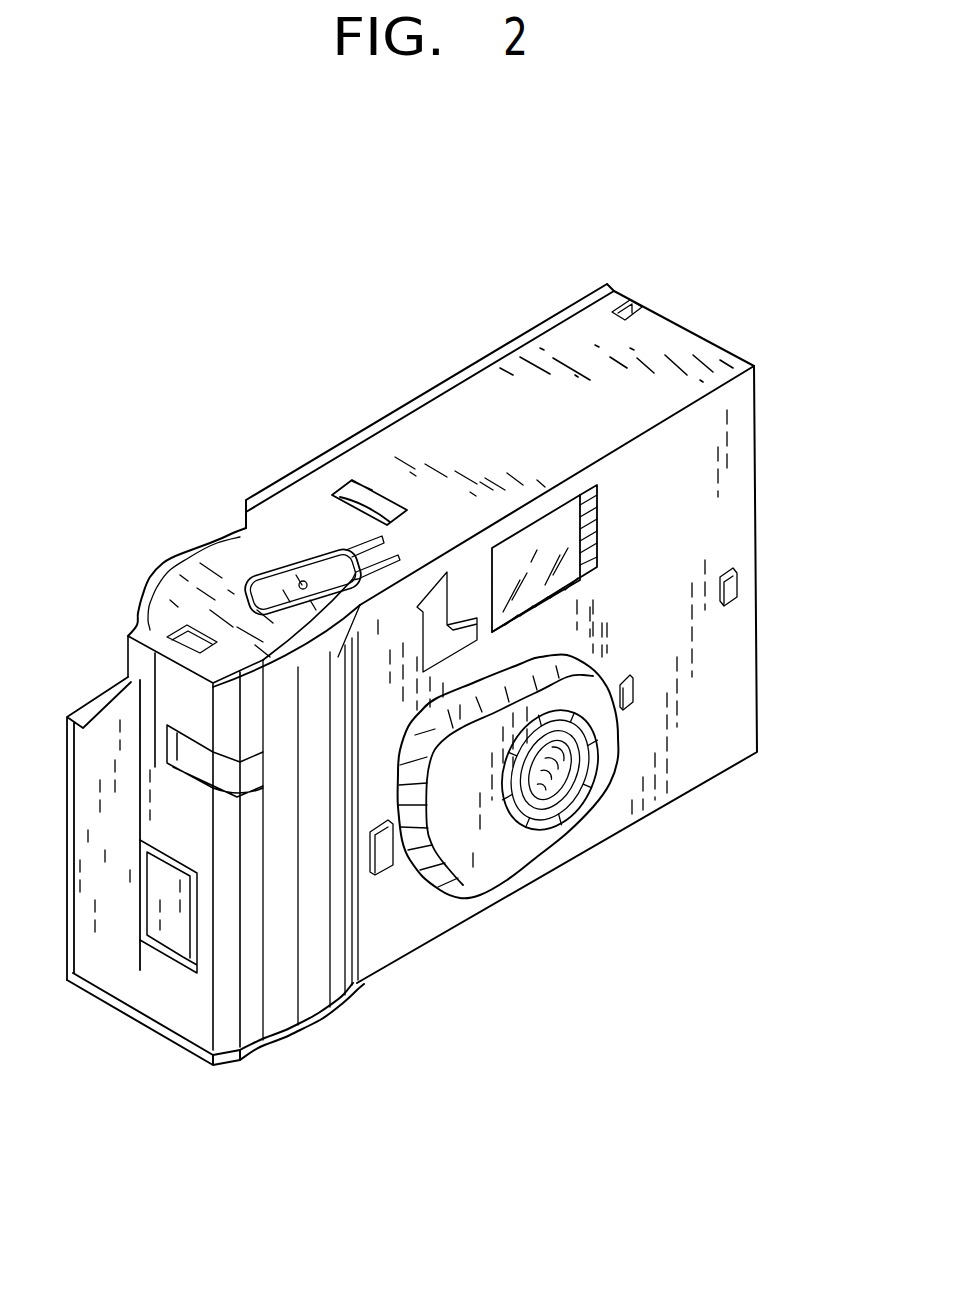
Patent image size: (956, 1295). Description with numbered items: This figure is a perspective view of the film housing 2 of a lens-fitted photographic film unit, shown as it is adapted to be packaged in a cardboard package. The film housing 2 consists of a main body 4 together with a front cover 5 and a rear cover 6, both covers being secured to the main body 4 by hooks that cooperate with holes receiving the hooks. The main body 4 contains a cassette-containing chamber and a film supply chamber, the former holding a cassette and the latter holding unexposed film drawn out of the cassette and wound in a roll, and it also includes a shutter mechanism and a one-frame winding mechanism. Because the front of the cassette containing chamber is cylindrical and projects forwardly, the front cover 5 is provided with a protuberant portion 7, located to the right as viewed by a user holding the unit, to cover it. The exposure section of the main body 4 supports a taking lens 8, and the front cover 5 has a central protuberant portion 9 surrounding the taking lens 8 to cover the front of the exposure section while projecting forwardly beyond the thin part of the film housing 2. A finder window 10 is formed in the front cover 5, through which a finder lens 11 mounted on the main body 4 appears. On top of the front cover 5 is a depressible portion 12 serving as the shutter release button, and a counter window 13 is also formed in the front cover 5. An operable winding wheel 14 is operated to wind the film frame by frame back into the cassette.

The film housing 2 is at (652, 268).
The main body 4 is at (118, 982).
The front cover 5 is at (668, 800).
The rear cover 6 is at (452, 377).
The protuberant portion 7 is at (318, 997).
The taking lens 8 is at (557, 793).
The central protuberant portion 9 is at (460, 872).
The finder window 10 is at (580, 582).
The finder lens 11 is at (543, 540).
The depressible portion 12 is at (277, 578).
The counter window 13 is at (370, 495).
The operable winding wheel 14 is at (163, 545).